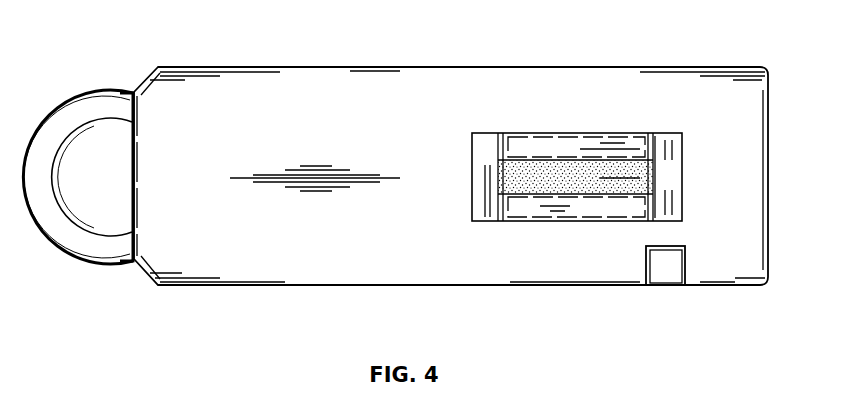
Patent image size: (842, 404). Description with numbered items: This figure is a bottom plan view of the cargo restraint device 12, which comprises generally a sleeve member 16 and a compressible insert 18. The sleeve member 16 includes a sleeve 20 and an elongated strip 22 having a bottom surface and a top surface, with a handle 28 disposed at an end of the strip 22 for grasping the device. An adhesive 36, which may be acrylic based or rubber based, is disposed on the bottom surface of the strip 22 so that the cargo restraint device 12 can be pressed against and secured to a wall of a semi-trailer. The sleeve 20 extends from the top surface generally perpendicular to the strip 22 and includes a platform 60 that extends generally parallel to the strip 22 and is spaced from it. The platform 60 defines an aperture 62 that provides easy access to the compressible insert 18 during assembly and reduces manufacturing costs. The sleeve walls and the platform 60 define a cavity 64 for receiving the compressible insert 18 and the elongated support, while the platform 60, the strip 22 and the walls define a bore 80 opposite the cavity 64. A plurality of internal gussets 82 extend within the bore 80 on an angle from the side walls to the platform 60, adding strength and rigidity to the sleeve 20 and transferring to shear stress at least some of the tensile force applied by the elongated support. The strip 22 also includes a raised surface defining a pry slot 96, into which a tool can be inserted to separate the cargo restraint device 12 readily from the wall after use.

The cargo restraint device 12 is at (137, 303).
The sleeve member 16 is at (588, 314).
The compressible insert 18 is at (597, 183).
The sleeve 20 is at (666, 142).
The elongated strip 22 is at (272, 287).
The handle 28 is at (78, 96).
The adhesive 36 is at (235, 90).
The platform 60 is at (670, 148).
The aperture 62 is at (627, 184).
The cavity 64 is at (593, 140).
The bore 80 is at (527, 218).
The internal gussets 82 is at (500, 207).
The pry slot 96 is at (668, 270).